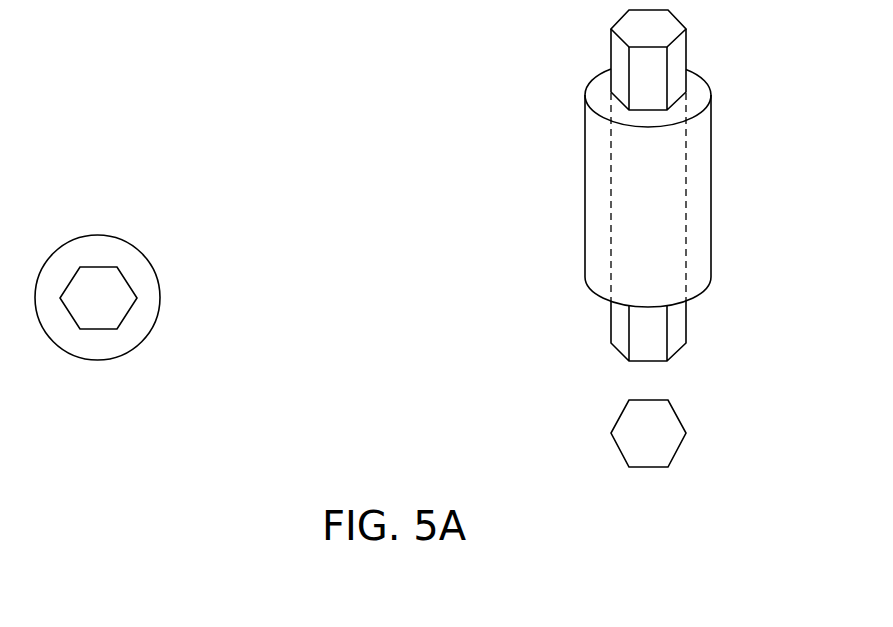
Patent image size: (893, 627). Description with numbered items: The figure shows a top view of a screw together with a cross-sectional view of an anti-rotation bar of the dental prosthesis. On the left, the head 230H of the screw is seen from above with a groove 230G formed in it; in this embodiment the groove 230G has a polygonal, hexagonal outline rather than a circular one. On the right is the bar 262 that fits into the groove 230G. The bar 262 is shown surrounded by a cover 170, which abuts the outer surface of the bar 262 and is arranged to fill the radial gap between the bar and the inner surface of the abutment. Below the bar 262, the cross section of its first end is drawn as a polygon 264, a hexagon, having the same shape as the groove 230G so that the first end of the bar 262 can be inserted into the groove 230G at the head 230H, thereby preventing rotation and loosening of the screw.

The groove 230G is at (112, 297).
The head of the screw 230H is at (97, 360).
The cover 170 is at (627, 238).
The bar 262 is at (643, 203).
The polygon 264 is at (650, 361).